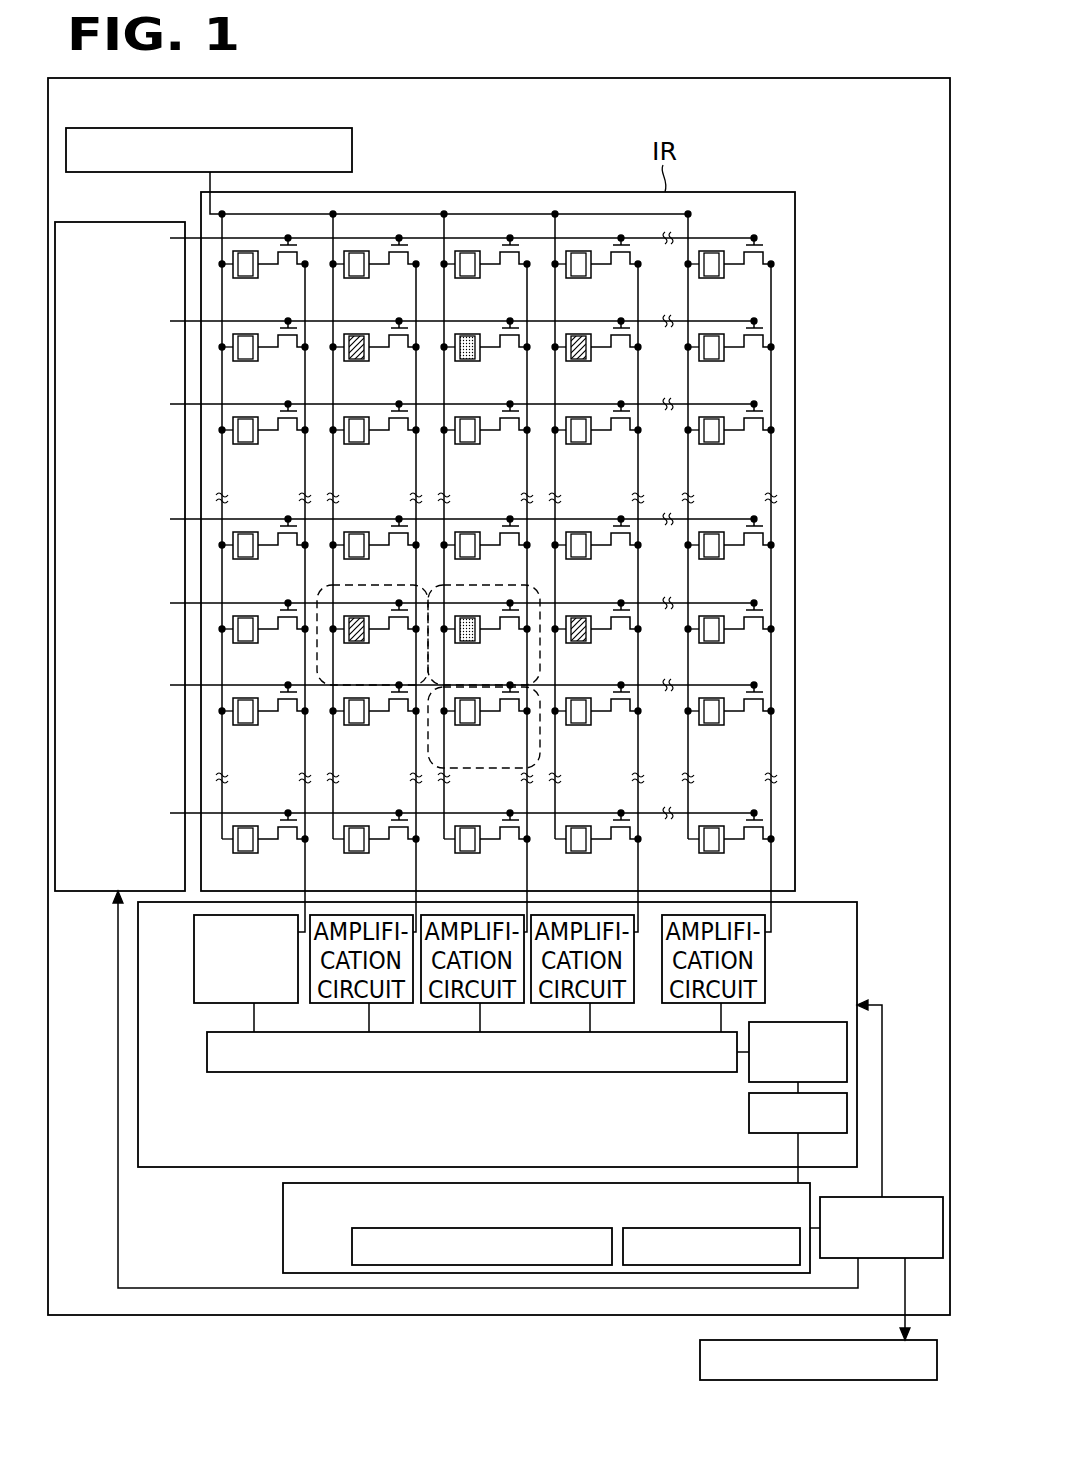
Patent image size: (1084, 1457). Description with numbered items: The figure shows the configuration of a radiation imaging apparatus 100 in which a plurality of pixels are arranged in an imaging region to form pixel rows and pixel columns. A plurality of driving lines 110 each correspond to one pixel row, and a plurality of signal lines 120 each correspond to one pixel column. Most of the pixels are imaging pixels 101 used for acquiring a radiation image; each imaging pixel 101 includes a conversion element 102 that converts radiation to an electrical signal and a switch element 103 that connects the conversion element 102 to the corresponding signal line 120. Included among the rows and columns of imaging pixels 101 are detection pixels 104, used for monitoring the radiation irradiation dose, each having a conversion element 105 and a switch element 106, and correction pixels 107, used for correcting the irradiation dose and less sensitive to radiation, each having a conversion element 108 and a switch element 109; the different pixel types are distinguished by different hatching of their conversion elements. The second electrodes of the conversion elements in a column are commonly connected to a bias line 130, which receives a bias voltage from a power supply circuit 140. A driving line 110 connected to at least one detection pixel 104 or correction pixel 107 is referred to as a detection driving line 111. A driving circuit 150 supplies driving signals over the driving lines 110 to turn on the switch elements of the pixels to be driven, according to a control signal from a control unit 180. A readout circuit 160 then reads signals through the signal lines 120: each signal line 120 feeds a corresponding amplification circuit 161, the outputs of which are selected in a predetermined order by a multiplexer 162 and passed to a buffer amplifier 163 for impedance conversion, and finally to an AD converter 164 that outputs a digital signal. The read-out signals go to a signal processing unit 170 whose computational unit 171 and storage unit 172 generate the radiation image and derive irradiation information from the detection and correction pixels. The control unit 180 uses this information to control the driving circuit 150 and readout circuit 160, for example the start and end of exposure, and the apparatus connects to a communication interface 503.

The radiation imaging apparatus 100 is at (633, 78).
The imaging pixel 101 is at (490, 770).
The conversion element 102 is at (468, 724).
The switch element 103 is at (512, 710).
The detection pixel 104 is at (381, 587).
The conversion element 105 is at (357, 640).
The switch element 106 is at (401, 628).
The correction pixel 107 is at (492, 587).
The conversion element 108 is at (468, 640).
The switch element 109 is at (512, 628).
The driving line 110 is at (213, 238).
The detection driving line 111 is at (262, 587).
The signal line 120 is at (415, 737).
The bias line 130 is at (690, 228).
The power supply circuit 140 is at (355, 151).
The driving circuit 150 is at (93, 222).
The readout circuit 160 is at (171, 1168).
The amplification circuit 161 is at (193, 949).
The multiplexer 162 is at (543, 1073).
The buffer amplifier 163 is at (817, 1022).
The AD converter 164 is at (748, 1110).
The signal processing unit 170 is at (283, 1208).
The computational unit 171 is at (577, 1228).
The storage unit 172 is at (755, 1216).
The control unit 180 is at (910, 1197).
The communication interface 503 is at (700, 1358).